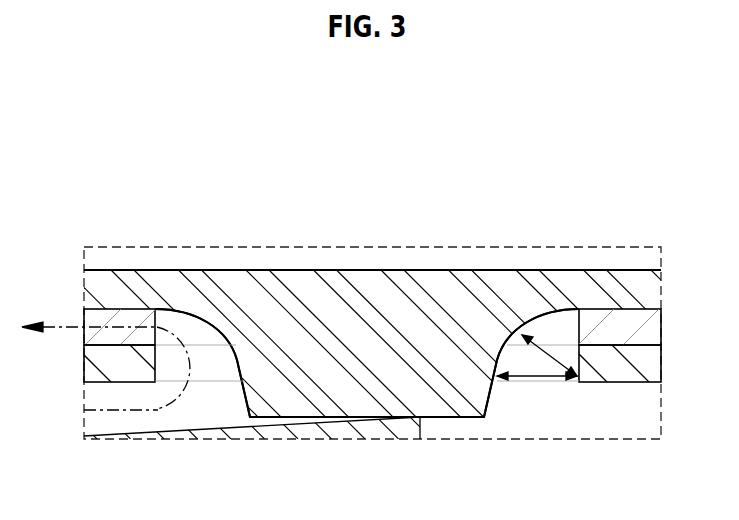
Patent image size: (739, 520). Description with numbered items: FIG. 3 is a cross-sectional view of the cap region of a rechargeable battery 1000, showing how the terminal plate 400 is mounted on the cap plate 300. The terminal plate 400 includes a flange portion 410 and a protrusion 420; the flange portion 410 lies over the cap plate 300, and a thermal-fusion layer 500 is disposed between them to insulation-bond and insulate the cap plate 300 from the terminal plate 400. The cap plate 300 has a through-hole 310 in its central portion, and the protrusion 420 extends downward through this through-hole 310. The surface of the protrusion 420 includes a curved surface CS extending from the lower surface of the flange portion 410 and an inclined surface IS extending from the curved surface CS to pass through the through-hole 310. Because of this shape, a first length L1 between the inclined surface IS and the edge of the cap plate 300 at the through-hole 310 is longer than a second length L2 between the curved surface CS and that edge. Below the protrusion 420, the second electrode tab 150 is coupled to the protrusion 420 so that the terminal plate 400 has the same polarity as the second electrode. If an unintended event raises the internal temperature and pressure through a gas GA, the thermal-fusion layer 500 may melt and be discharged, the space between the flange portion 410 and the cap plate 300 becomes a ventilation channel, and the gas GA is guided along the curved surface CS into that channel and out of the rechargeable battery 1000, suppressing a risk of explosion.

The rechargeable battery 1000 is at (372, 154).
The terminal plate 400 is at (327, 270).
The flange portion 410 is at (623, 278).
The protrusion 420 is at (378, 397).
The thermal-fusion layer 500 is at (651, 328).
The cap plate 300 is at (651, 365).
The through-hole 310 is at (218, 366).
The second electrode tab 150 is at (384, 432).
The curved surface CS is at (207, 315).
The inclined surface IS is at (238, 360).
The gas GA is at (133, 412).
The first length L1 is at (517, 383).
The second length L2 is at (547, 355).